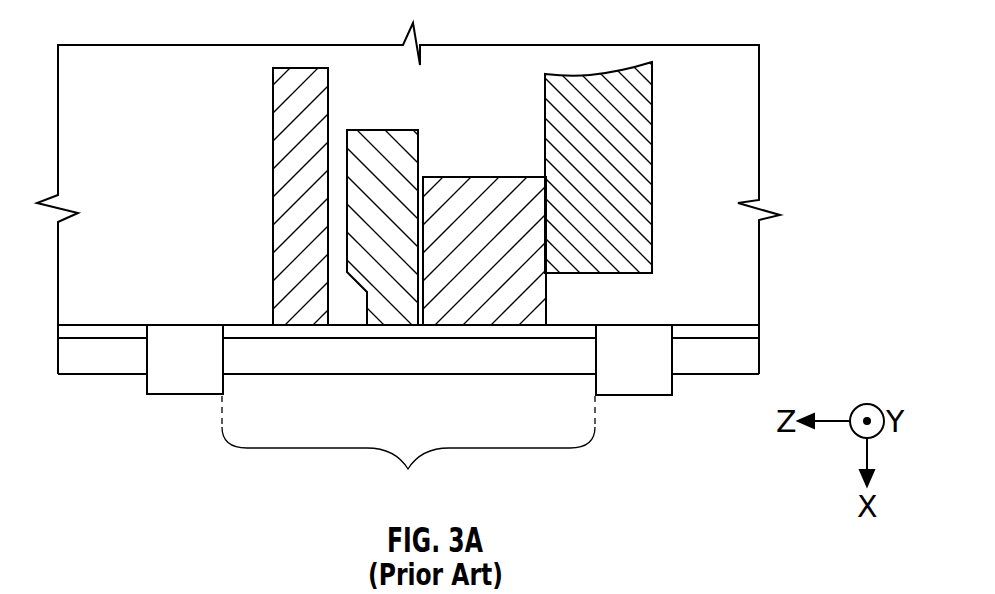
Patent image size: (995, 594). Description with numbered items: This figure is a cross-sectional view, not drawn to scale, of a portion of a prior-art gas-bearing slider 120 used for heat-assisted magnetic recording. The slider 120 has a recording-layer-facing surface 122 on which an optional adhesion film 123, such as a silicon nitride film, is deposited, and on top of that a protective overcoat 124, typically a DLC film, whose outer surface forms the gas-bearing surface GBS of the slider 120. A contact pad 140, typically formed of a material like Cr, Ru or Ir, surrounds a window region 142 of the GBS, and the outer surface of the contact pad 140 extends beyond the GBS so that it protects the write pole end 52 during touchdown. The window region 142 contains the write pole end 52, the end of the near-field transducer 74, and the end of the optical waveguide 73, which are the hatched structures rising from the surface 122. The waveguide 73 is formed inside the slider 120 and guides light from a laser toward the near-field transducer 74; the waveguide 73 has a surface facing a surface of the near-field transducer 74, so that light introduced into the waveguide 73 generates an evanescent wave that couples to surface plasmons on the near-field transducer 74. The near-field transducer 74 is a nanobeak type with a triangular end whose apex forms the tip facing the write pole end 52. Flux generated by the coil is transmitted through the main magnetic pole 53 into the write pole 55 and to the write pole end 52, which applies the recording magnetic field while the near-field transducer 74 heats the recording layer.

The gas-bearing slider 120 is at (745, 130).
The recording-layer-facing surface 122 is at (730, 325).
The adhesion film 123 is at (752, 335).
The protective overcoat 124 is at (752, 365).
The contact pad 140 is at (183, 375).
The window region 142 is at (408, 452).
The gas-bearing surface GBS is at (110, 375).
The optical waveguide 73 is at (315, 113).
The near-field transducer 74 is at (347, 243).
The write pole 55 is at (443, 185).
The write pole end 52 is at (532, 320).
The main magnetic pole 53 is at (557, 122).